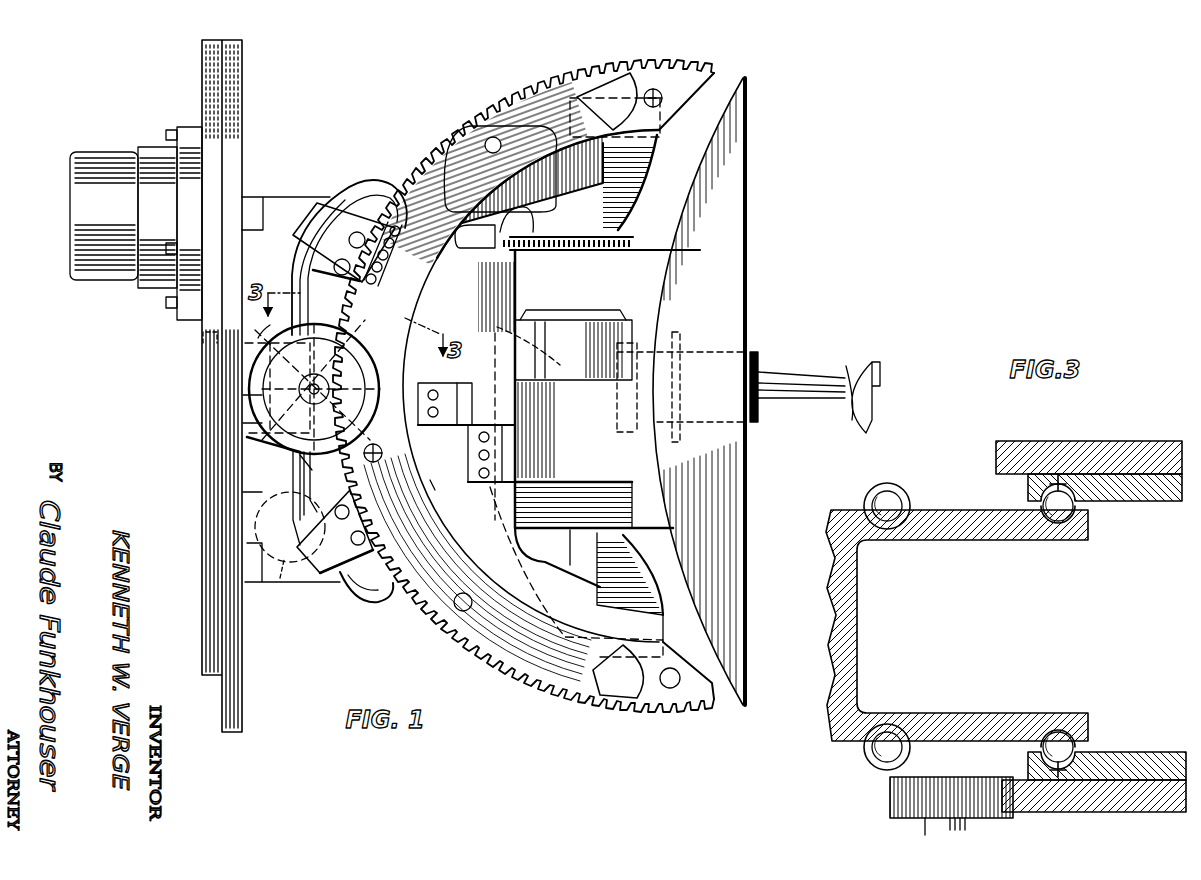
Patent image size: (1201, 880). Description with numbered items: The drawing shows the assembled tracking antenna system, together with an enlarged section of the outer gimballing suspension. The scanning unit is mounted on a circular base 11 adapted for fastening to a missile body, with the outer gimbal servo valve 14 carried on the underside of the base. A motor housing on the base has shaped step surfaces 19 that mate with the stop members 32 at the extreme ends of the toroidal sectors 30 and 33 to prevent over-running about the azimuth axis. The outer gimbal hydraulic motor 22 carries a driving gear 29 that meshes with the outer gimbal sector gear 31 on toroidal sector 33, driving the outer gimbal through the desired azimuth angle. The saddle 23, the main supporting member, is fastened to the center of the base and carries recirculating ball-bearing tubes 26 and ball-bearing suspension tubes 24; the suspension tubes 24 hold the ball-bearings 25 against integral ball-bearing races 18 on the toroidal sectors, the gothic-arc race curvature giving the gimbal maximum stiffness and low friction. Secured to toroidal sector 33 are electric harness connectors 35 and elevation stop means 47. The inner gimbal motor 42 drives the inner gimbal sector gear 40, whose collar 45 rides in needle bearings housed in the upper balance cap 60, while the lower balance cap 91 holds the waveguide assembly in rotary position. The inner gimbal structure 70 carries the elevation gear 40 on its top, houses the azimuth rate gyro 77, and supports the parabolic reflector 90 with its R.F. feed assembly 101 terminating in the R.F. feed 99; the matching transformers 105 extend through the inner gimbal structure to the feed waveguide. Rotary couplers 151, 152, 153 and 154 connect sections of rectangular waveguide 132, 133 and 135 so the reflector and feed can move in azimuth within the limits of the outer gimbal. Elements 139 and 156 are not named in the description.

In FIG. 1, the circular base 11 is at (243, 126).
In FIG. 1, the outer gimbal servo valve 14 is at (124, 150).
In FIG. 3, the ball-bearing races 18 is at (1063, 493).
In FIG. 1, the shaped step surfaces 19 is at (256, 336).
In FIG. 1, the outer gimbal hydraulic motor 22 is at (290, 470).
In FIG. 1, the saddle 23 is at (286, 193).
In FIG. 3, the saddle 23 is at (868, 620).
In FIG. 1, the ball-bearing suspension tubes 24 is at (310, 221).
In FIG. 3, the ball-bearing suspension tubes 24 is at (1078, 514).
In FIG. 1, the ball-bearings 25 is at (390, 255).
In FIG. 3, the ball-bearings 25 is at (892, 513).
In FIG. 1, the recirculating ball-bearing tubes 26 is at (362, 186).
In FIG. 3, the recirculating ball-bearing tubes 26 is at (866, 494).
In FIG. 1, the driving gear 29 is at (312, 387).
In FIG. 3, the driving gear 29 is at (890, 799).
In FIG. 3, the toroidal sector 30 is at (1142, 502).
In FIG. 1, the outer gimbal sector gear 31 is at (518, 102).
In FIG. 3, the outer gimbal sector gear 31 is at (996, 449).
In FIG. 1, the stop members 32 is at (613, 90).
In FIG. 1, the toroidal sector 33 is at (589, 583).
In FIG. 1, the electric harness connectors 35 is at (456, 384).
In FIG. 1, the inner gimbal sector gear 40 is at (617, 235).
In FIG. 1, the inner gimbal motor 42 is at (524, 248).
In FIG. 1, the collar 45 is at (575, 248).
In FIG. 1, the elevation stop means 47 is at (504, 428).
In FIG. 1, the upper balance cap 60 is at (627, 200).
In FIG. 1, the inner gimbal structure 70 is at (594, 407).
In FIG. 1, the azimuth rate gyro 77 is at (586, 318).
In FIG. 1, the parabolic reflector 90 is at (749, 222).
In FIG. 1, the lower balance cap 91 is at (640, 582).
In FIG. 1, the R.F. feed 99 is at (880, 370).
In FIG. 1, the R.F. feed assembly 101 is at (760, 357).
In FIG. 1, the matching transformers 105 is at (652, 322).
In FIG. 1, the rectangular waveguide section 132 is at (243, 492).
In FIG. 1, the rectangular waveguide section 133 is at (243, 395).
In FIG. 1, the rectangular waveguide section 135 is at (500, 653).
In FIG. 1, the pivot pin 139 is at (321, 470).
In FIG. 1, the rotary coupler 151 is at (430, 388).
In FIG. 1, the rotary coupler 152 is at (243, 423).
In FIG. 1, the rotary coupler 153 is at (280, 580).
In FIG. 1, the rotary coupler 154 is at (432, 482).
In FIG. 1, the phantom notch 156 is at (202, 338).